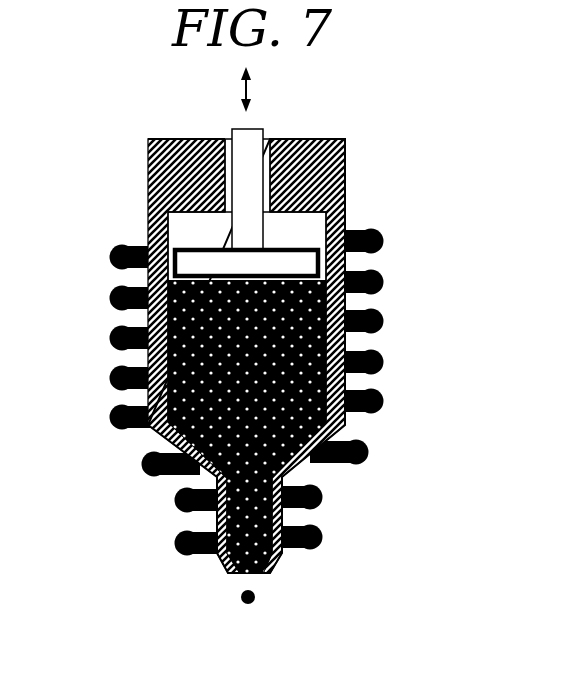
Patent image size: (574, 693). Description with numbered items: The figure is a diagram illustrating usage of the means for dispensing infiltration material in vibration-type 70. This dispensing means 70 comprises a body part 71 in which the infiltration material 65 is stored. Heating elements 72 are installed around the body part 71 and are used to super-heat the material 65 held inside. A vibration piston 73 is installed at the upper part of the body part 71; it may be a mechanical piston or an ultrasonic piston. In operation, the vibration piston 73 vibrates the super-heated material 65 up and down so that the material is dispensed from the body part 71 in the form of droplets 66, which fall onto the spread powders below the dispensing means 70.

The dispensing infiltration material means in vibration-type 70 is at (242, 327).
The body part 71 is at (148, 180).
The heating elements 72 is at (110, 338).
The material 65 is at (347, 384).
The vibration piston 73 is at (248, 142).
The droplets 66 is at (255, 600).